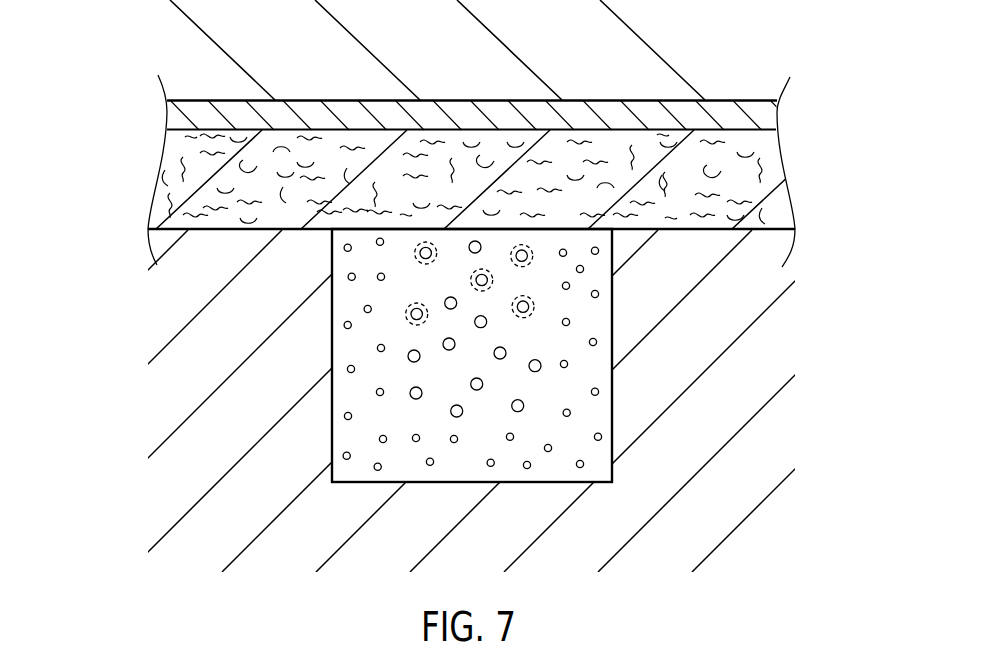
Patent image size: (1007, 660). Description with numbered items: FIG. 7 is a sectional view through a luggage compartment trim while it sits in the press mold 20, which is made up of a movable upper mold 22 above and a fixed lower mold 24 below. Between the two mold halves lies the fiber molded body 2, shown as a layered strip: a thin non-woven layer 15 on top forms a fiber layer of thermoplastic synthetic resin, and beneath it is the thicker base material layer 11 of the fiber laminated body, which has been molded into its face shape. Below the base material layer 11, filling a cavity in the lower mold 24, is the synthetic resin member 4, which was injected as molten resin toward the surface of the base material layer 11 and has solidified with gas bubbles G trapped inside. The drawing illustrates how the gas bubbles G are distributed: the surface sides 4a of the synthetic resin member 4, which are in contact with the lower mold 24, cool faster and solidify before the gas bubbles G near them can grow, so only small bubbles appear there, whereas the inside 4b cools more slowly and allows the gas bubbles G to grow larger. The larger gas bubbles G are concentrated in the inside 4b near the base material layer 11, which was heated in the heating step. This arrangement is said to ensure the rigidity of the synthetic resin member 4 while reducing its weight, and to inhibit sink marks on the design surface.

The fiber molded body 2 is at (724, 101).
The non-woven layer 15 is at (760, 118).
The base material layer 11 is at (750, 173).
The press mold 20 is at (503, 286).
The upper mold 22 is at (245, 49).
The lower mold 24 is at (230, 419).
The synthetic resin member 4 is at (472, 442).
The surface side 4a is at (612, 405).
The inside 4b is at (452, 282).
The gas bubble G is at (474, 241).